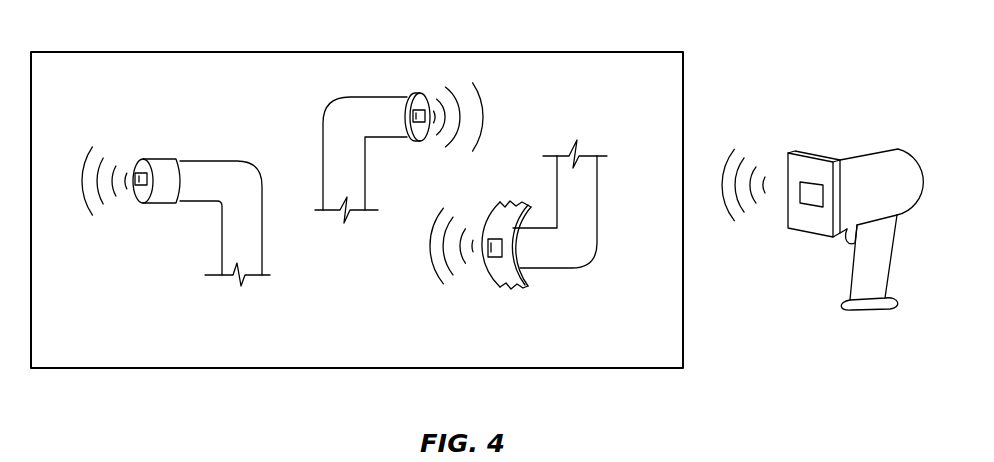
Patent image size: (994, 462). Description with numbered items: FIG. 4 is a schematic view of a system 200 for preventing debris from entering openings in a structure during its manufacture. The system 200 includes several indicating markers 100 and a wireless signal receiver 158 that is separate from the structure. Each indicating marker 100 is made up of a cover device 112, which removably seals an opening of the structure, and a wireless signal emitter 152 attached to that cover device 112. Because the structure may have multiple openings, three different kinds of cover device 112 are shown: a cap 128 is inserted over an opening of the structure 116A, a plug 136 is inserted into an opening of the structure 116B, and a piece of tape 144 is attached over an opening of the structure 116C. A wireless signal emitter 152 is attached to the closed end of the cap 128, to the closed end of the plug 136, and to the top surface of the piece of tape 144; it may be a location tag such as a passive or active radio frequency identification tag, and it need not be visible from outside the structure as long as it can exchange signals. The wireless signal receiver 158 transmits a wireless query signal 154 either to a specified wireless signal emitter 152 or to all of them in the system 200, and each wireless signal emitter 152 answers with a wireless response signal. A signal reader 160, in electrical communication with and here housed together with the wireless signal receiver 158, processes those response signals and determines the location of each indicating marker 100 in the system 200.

The indicating marker 100 is at (337, 183).
The cover device 112 is at (148, 141).
The structure 116A is at (225, 183).
The structure 116B is at (338, 135).
The structure 116C is at (578, 242).
The cap 128 is at (170, 198).
The plug 136 is at (413, 95).
The piece of tape 144 is at (497, 276).
The wireless signal emitter 152 is at (133, 187).
The wireless query signal 154 is at (735, 152).
The wireless signal receiver 158 is at (831, 202).
The signal reader 160 is at (815, 168).
The system 200 is at (182, 368).